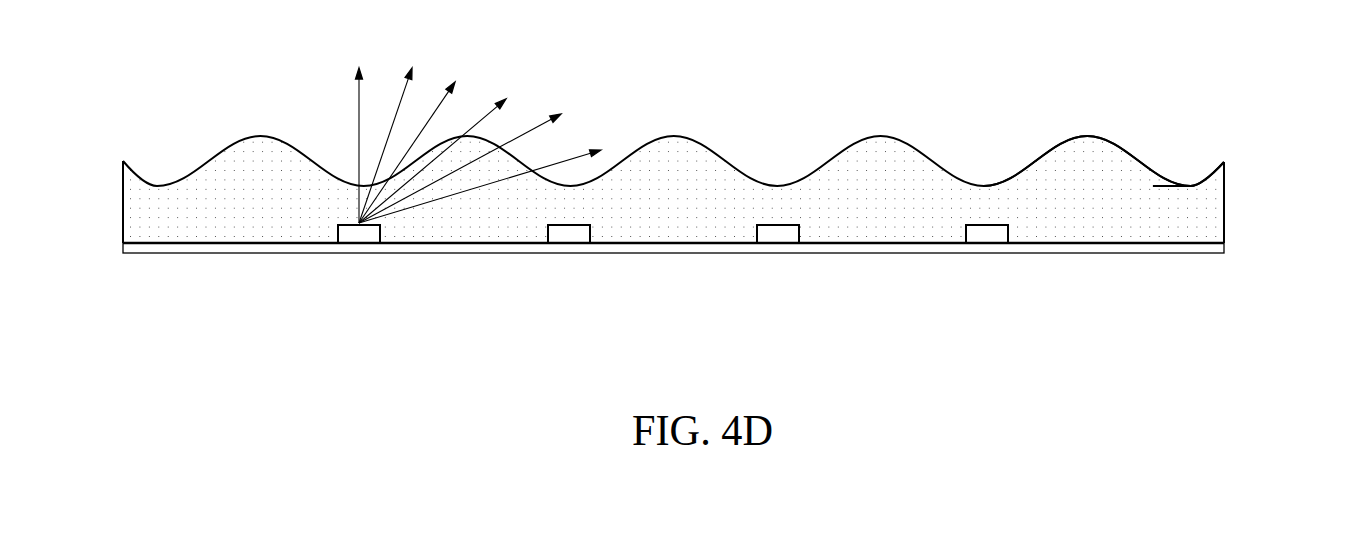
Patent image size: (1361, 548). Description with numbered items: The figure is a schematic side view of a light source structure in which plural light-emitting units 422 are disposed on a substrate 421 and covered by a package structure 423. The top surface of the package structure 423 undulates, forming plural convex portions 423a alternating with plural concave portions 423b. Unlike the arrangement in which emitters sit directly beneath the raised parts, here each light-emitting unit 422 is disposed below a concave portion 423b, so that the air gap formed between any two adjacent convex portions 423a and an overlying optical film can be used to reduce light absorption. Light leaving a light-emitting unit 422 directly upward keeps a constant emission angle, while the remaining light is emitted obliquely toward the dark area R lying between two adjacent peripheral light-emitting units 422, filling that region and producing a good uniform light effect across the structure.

The substrate 421 is at (297, 247).
The light-emitting units 422 is at (363, 232).
The package structure 423 is at (1208, 212).
The convex portions 423a is at (1092, 152).
The concave portions 423b is at (1190, 185).
The dark area R is at (500, 70).